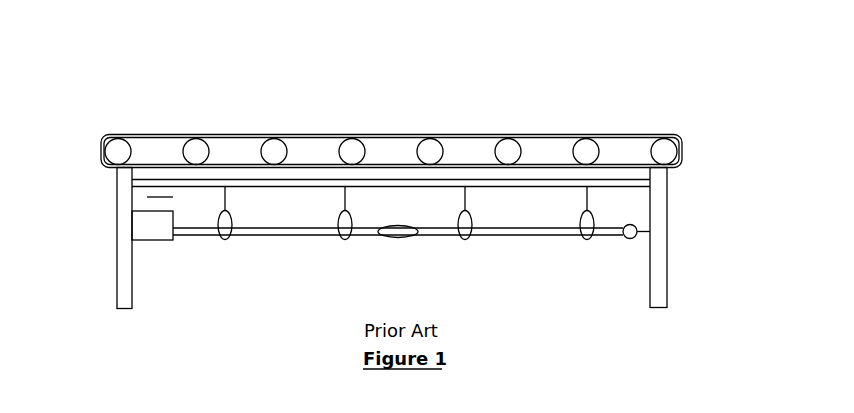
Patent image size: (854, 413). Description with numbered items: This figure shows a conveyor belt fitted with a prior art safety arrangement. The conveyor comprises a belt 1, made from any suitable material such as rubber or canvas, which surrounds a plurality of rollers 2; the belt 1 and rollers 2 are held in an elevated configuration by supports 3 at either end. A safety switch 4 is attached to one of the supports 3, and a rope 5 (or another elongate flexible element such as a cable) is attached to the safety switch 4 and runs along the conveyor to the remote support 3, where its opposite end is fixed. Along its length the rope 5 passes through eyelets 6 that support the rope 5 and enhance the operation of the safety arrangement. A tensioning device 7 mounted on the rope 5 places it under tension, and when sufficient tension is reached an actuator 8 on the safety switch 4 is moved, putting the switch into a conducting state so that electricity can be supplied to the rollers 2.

The belt 1 is at (545, 134).
The rollers 2 is at (276, 145).
The supports 3 is at (125, 255).
The safety switch 4 is at (138, 218).
The rope 5 is at (210, 240).
The eyelets 6 is at (345, 197).
The tensioning device 7 is at (400, 225).
The actuator 8 is at (158, 210).